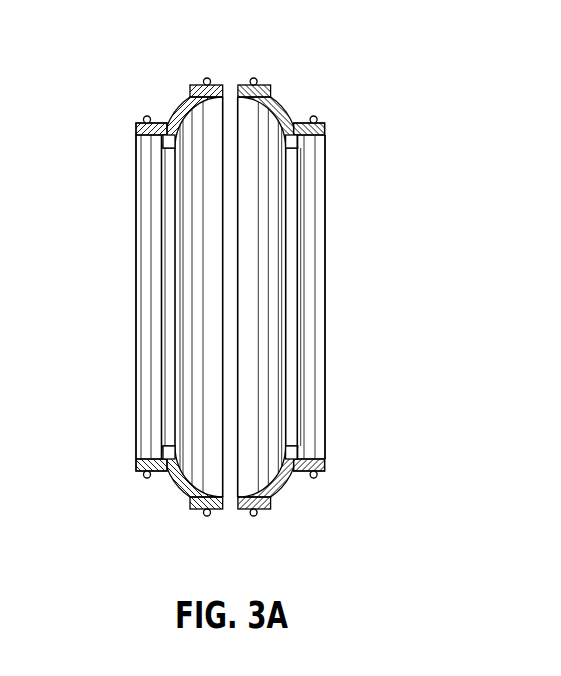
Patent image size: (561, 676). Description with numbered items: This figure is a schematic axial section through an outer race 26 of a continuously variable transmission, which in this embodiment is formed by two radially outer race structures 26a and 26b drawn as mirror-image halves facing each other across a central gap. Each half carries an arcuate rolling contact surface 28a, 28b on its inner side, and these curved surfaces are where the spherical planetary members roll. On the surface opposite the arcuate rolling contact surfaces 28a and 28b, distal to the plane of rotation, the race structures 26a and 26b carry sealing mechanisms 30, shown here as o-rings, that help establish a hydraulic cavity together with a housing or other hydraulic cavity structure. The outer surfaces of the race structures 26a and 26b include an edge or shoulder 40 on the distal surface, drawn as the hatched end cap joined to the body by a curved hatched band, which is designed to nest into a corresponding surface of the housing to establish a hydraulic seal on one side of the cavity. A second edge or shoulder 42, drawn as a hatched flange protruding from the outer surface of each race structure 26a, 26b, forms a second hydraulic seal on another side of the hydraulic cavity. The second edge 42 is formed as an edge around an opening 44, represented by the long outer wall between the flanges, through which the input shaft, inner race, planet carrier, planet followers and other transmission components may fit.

The outer race 26 is at (385, 53).
The radially outer race structure 26a is at (168, 220).
The radially outer race structure 26b is at (293, 220).
The arcuate rolling contact surface 28a is at (190, 347).
The arcuate rolling contact surface 28b is at (282, 348).
The sealing mechanism 30 is at (207, 78).
The edge or shoulder 40 is at (192, 96).
The second edge or shoulder 42 is at (137, 130).
The opening 44 is at (135, 303).